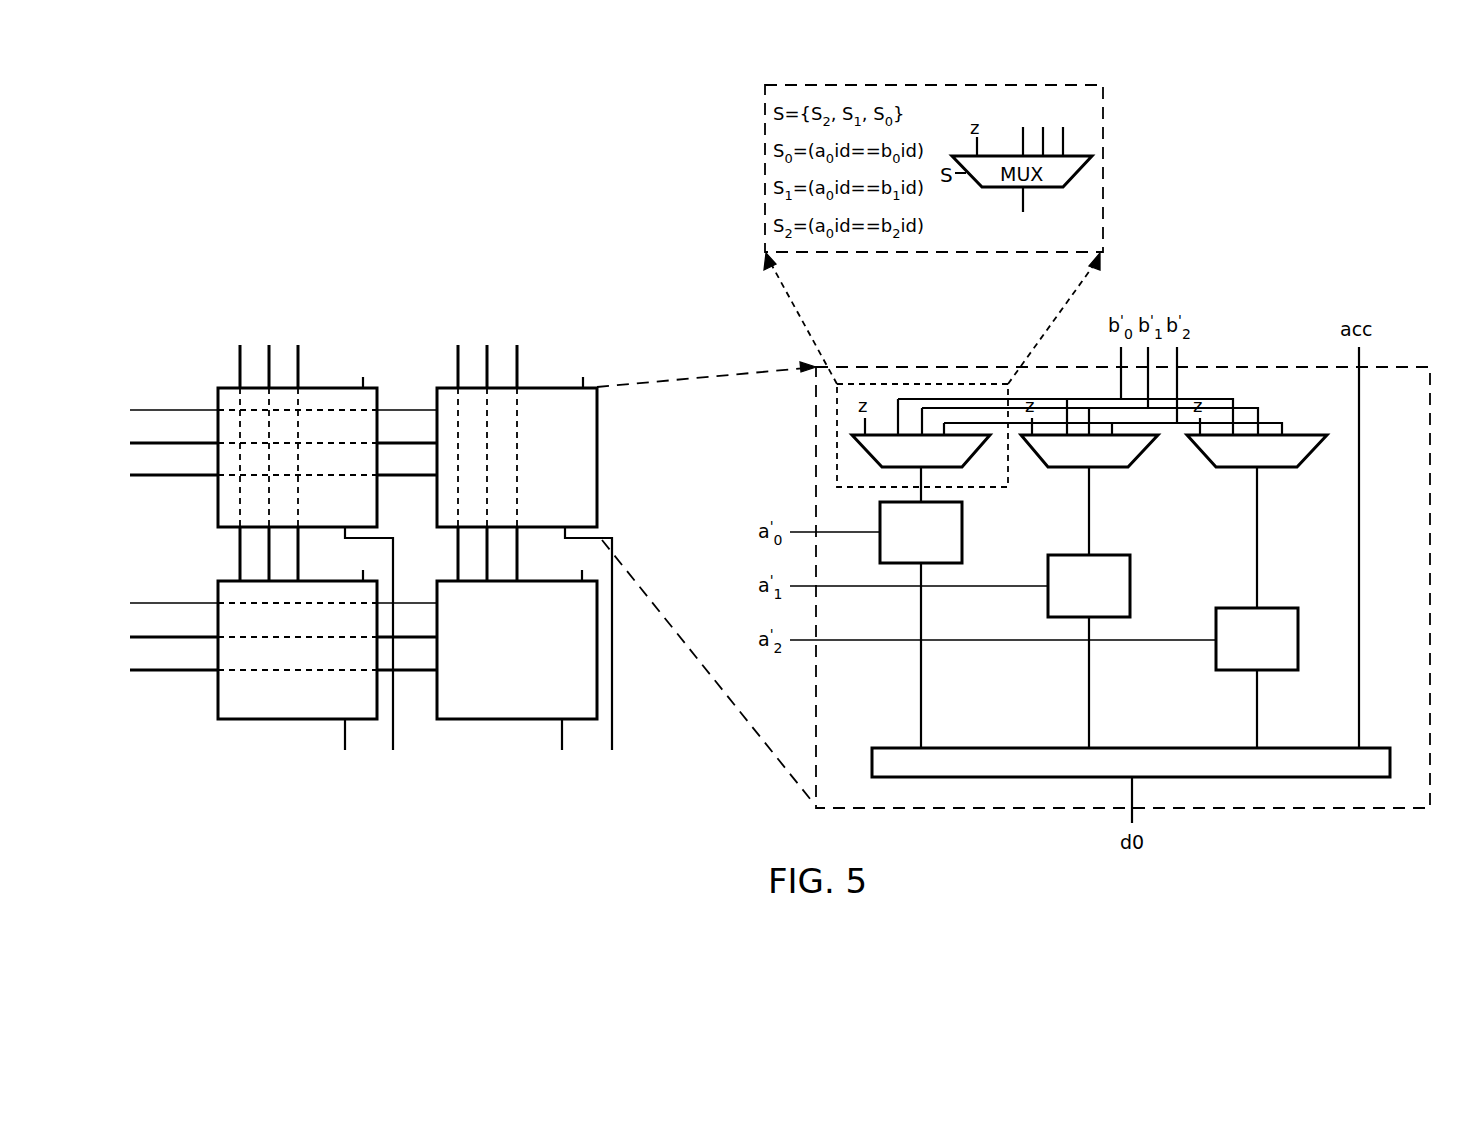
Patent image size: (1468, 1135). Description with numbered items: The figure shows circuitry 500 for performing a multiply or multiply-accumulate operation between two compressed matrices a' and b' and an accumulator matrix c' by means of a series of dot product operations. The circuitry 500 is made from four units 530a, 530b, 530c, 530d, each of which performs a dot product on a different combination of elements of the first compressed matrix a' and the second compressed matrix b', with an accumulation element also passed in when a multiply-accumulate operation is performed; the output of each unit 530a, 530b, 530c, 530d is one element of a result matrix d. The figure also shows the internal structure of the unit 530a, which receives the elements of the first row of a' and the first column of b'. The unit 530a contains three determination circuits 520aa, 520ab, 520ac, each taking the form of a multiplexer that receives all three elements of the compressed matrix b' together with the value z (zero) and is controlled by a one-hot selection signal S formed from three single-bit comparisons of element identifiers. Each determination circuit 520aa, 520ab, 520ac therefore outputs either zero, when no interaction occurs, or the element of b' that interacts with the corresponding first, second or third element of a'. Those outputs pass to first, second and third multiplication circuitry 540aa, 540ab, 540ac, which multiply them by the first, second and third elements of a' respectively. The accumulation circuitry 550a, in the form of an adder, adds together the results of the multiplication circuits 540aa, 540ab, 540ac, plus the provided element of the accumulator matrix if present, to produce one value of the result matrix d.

The circuitry 500 is at (648, 255).
The unit 530a is at (597, 457).
The unit 530b is at (218, 394).
The unit 530c is at (287, 720).
The unit 530d is at (503, 720).
The first determination circuit 520aa is at (900, 384).
The second determination circuit 520ab is at (1104, 469).
The third determination circuit 520ac is at (1282, 469).
The first multiplication circuitry 540aa is at (860, 450).
The second multiplication circuitry 540ab is at (1130, 587).
The third multiplication circuitry 540ac is at (1304, 584).
The accumulation circuitry 550a is at (1157, 748).